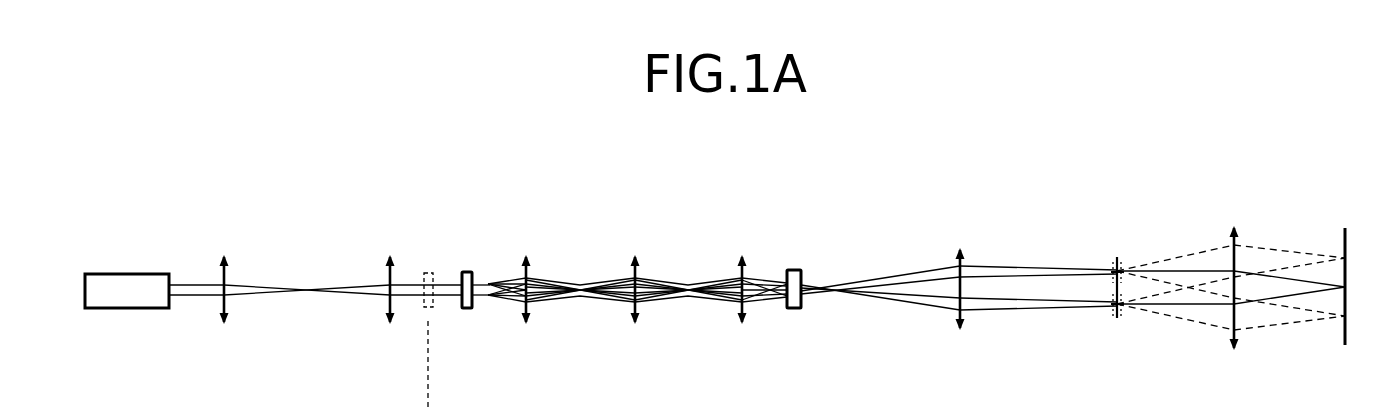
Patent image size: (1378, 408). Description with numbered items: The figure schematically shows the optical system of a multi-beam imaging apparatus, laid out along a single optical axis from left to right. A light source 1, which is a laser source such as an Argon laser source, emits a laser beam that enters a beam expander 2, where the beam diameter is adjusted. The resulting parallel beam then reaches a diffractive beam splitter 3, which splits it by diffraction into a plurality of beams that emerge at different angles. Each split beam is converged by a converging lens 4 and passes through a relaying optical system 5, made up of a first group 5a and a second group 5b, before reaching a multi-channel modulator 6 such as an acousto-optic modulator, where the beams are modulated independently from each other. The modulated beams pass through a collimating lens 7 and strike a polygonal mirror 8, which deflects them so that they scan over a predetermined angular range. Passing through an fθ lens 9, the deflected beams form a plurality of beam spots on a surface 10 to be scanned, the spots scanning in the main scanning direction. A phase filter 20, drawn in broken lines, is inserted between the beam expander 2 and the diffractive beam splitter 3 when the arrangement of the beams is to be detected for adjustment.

The light source 1 is at (131, 272).
The beam expander 2 is at (212, 213).
The phase filter 20 is at (429, 268).
The diffractive beam splitter 3 is at (466, 271).
The converging lens 4 is at (527, 255).
The relaying optical system 5 is at (625, 213).
The first group 5a is at (632, 325).
The second group 5b is at (738, 325).
The multi-channel modulator 6 is at (793, 270).
The collimating lens 7 is at (961, 248).
The polygonal mirror 8 is at (1117, 255).
The fθ lens 9 is at (1235, 226).
The surface to be scanned 10 is at (1345, 226).